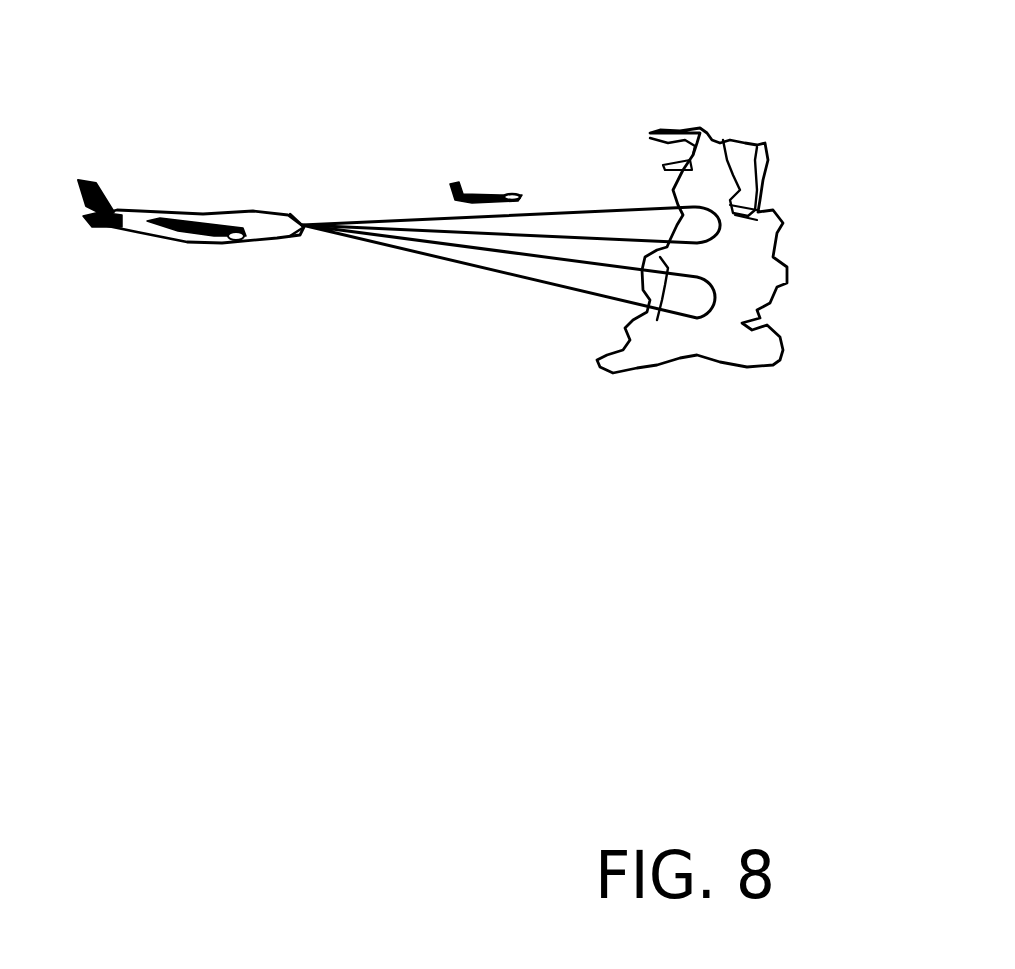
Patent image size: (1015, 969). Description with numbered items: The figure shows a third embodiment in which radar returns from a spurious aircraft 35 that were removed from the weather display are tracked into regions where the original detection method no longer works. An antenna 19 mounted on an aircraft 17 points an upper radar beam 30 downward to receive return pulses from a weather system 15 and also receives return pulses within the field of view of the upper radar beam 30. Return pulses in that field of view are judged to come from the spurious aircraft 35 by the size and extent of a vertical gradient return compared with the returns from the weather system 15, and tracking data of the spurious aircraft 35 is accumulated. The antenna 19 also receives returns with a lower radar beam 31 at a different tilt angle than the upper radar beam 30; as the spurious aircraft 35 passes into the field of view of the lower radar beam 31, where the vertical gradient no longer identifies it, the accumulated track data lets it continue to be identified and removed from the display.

The weather system 15 is at (757, 144).
The aircraft 17 is at (185, 211).
The antenna 19 is at (301, 224).
The upper radar beam 30 is at (781, 226).
The lower radar beam 31 is at (770, 305).
The spurious aircraft 35 is at (500, 190).